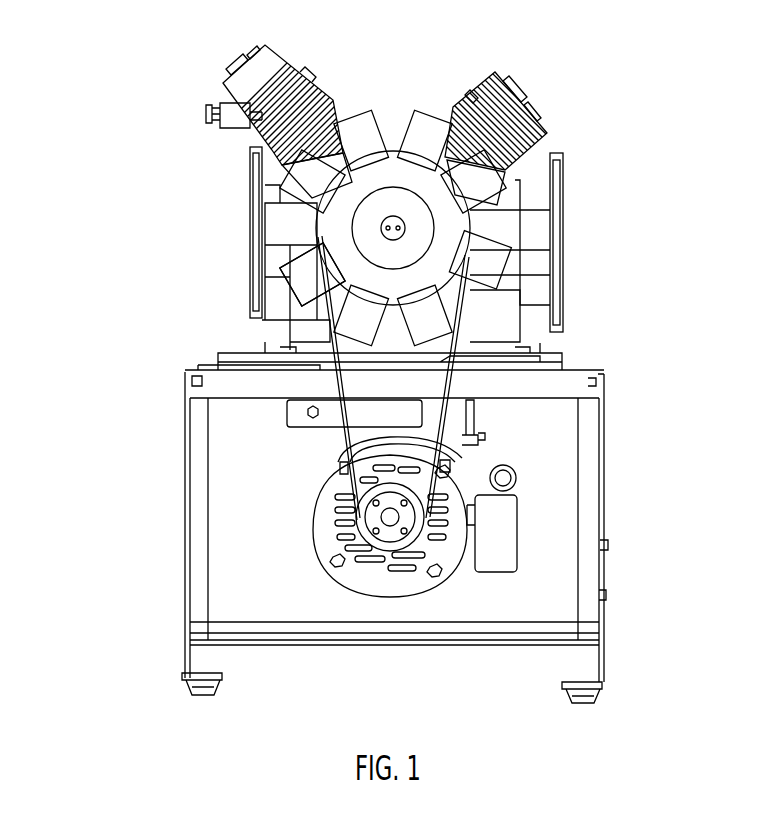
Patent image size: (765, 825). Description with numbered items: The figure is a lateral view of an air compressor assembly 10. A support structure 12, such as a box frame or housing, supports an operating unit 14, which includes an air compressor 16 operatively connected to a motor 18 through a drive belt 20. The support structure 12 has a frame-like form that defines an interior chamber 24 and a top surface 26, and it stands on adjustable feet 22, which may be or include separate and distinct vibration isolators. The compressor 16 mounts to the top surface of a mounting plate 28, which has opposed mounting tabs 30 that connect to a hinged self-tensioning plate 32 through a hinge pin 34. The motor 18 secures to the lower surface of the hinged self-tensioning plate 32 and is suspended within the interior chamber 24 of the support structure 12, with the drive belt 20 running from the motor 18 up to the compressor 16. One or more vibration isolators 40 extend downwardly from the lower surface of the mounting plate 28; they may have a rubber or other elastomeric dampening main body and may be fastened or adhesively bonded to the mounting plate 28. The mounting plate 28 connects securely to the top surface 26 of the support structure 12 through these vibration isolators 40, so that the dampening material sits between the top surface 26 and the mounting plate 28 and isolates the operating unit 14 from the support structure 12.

The air compressor assembly 10 is at (158, 76).
The support structure 12 is at (605, 490).
The operating unit 14 is at (402, 76).
The air compressor 16 is at (540, 122).
The motor 18 is at (532, 527).
The drive belt 20 is at (355, 438).
The adjustable feet 22 is at (186, 689).
The interior chamber 24 is at (555, 604).
The top surface 26 is at (197, 368).
The mounting plate 28 is at (568, 355).
The mounting tabs 30 is at (286, 414).
The hinged self-tensioning plate 32 is at (470, 446).
The hinge pin 34 is at (307, 411).
The vibration isolators 40 is at (205, 366).